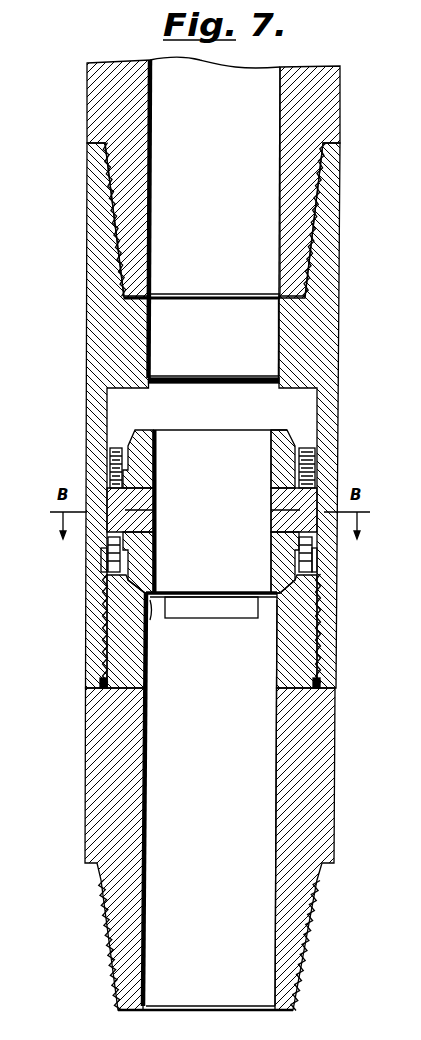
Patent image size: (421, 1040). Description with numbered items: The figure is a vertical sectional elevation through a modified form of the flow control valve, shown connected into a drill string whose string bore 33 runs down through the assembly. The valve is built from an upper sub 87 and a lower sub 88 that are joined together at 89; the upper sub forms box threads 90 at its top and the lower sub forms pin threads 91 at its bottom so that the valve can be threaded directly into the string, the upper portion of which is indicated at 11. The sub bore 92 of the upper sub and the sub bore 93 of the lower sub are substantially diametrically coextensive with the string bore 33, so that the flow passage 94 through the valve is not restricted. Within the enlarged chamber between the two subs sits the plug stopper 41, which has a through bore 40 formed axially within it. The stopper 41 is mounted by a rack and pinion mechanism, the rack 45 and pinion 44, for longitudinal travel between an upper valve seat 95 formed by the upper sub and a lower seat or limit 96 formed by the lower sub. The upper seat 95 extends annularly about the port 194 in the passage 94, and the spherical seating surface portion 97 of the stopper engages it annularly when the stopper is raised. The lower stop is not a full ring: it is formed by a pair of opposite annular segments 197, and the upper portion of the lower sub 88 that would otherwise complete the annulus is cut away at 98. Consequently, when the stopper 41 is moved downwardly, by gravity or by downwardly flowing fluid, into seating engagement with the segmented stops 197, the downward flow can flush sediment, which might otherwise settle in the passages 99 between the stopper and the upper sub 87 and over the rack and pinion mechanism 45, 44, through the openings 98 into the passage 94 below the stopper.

The tubing string 11 is at (84, 97).
The string bore 33 is at (279, 196).
The upper sub 87 is at (92, 321).
The lower sub 88 is at (92, 750).
The joint 89 is at (103, 633).
The box threads 90 is at (115, 221).
The pin threads 91 is at (108, 950).
The sub bore 92 is at (150, 341).
The sub bore 93 is at (147, 771).
The passage 94 is at (233, 670).
The upper valve seat 95 is at (149, 383).
The port 194 is at (212, 383).
The lower seat or limit 96 is at (153, 583).
The spherical seating surface portion 97 is at (287, 430).
The cut-away openings 98 is at (166, 604).
The annular segments 197 is at (151, 605).
The through bore 40 is at (153, 533).
The plug stopper 41 is at (140, 476).
The pinion 44 is at (135, 504).
The rack 45 is at (115, 448).
The passages 99 is at (305, 468).